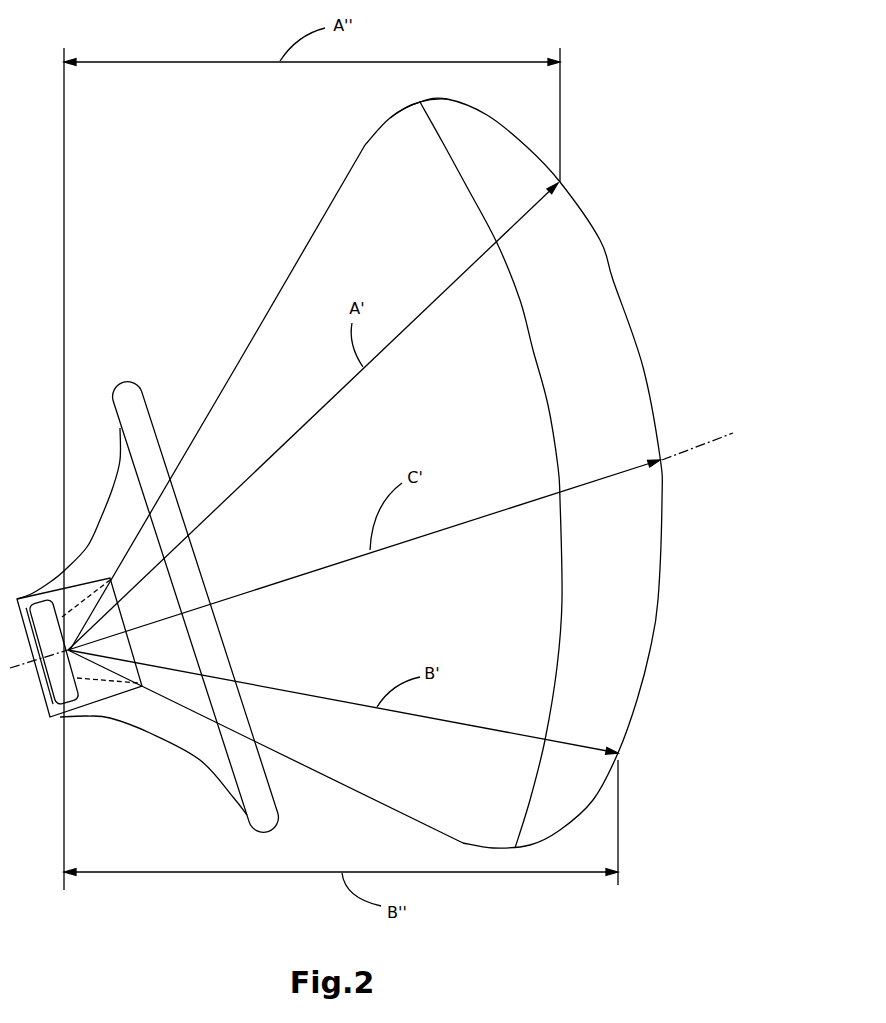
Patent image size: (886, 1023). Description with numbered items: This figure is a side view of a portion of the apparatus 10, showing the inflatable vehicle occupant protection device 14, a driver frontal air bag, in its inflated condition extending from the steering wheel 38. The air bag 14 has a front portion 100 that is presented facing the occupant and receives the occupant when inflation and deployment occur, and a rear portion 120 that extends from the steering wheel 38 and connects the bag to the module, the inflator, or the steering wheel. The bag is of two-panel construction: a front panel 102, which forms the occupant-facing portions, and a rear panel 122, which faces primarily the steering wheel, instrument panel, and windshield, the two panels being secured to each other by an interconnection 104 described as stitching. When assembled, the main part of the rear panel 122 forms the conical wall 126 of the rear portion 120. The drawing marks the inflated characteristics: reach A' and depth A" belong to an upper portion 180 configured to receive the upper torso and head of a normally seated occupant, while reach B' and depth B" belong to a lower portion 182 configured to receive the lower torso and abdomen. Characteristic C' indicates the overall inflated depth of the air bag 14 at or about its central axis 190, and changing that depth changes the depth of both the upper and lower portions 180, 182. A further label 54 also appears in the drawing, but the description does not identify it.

The apparatus 10 is at (160, 300).
The inflatable vehicle occupant protection device 14 is at (387, 188).
The steering wheel 38 is at (125, 405).
The spray coverage area 54 is at (440, 425).
The front portion 100 is at (530, 473).
The front panel 102 is at (613, 280).
The interconnection 104 is at (548, 405).
The rear portion 120 is at (298, 328).
The rear panel 122 is at (313, 232).
The conical wall 126 is at (320, 710).
The upper portion 180 is at (420, 102).
The lower portion 182 is at (507, 702).
The central axis 190 is at (685, 447).